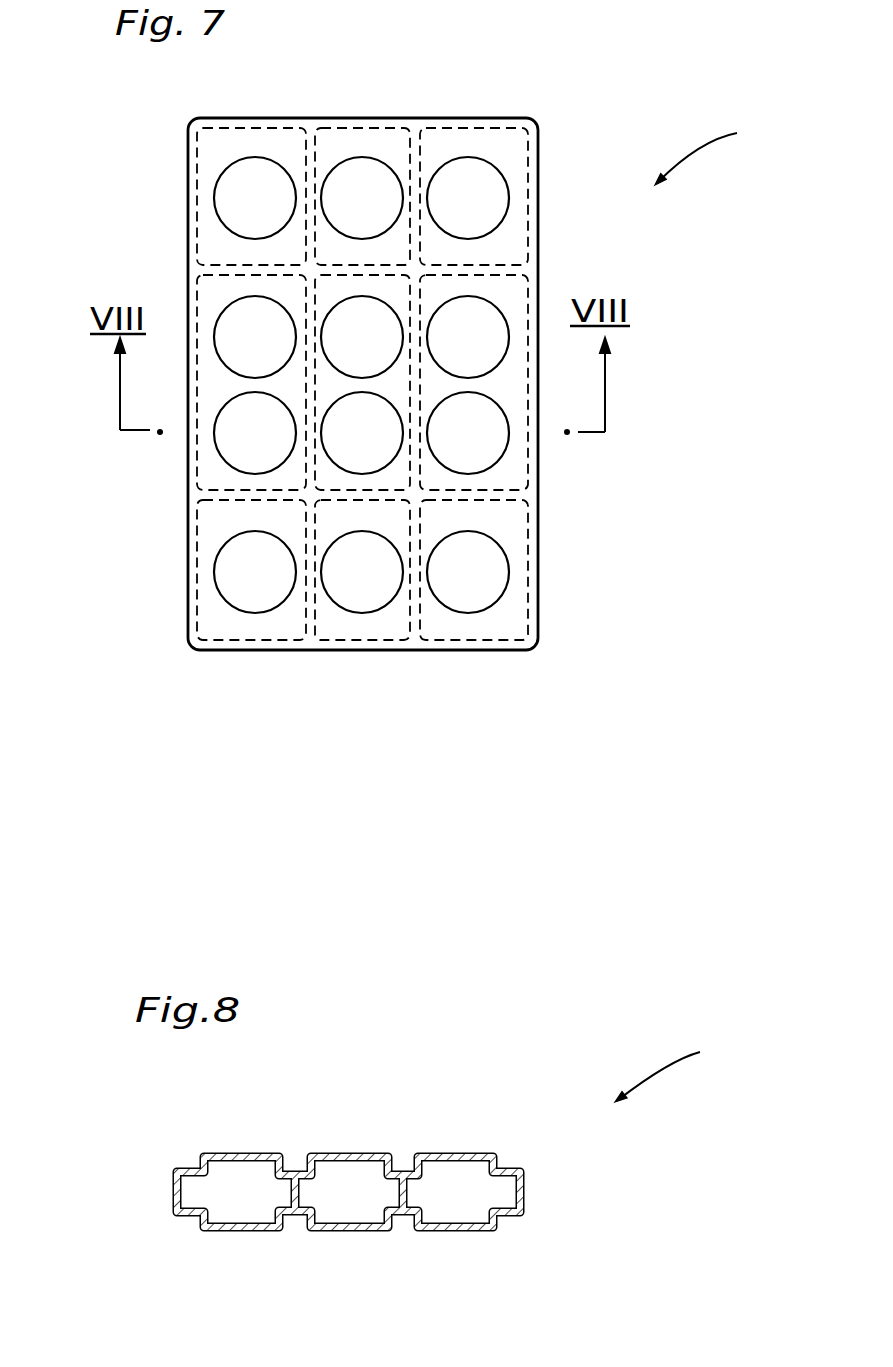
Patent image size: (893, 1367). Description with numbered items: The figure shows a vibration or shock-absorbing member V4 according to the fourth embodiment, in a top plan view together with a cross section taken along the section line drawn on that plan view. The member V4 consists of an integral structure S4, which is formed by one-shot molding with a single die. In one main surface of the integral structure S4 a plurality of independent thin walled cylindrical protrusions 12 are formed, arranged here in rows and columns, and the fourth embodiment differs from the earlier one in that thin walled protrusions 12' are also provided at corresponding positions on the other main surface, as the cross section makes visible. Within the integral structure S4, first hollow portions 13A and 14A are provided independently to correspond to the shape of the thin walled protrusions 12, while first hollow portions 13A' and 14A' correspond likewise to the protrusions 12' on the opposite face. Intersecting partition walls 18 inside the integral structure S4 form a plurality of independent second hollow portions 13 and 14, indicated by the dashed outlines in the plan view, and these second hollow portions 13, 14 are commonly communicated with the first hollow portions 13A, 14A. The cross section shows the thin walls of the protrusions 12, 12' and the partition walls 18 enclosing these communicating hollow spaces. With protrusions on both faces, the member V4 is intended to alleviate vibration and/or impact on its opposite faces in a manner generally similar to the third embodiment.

In FIG. 7, the thin walled cylindrical protrusion 12 is at (437, 416).
In FIG. 8, the thin walled cylindrical protrusion 12 is at (358, 1113).
In FIG. 8, the thin walled protrusion 12' is at (343, 1276).
In FIG. 7, the second hollow portion 13 is at (447, 138).
In FIG. 7, the first hollow portion 13A is at (543, 619).
In FIG. 7, the first hollow portion 13A' is at (495, 647).
In FIG. 7, the second hollow portion 14 is at (217, 403).
In FIG. 8, the second hollow portion 14 is at (196, 1190).
In FIG. 7, the first hollow portion 14A is at (128, 278).
In FIG. 8, the first hollow portion 14A is at (350, 1114).
In FIG. 7, the first hollow portion 14A' is at (178, 296).
In FIG. 8, the first hollow portion 14A' is at (397, 1258).
In FIG. 7, the partition wall 18 is at (228, 268).
In FIG. 8, the partition wall 18 is at (403, 1192).
In FIG. 7, the integral structure S4 is at (522, 118).
In FIG. 8, the integral structure S4 is at (495, 1150).
In FIG. 7, the vibration or shock-absorbing member V4 is at (734, 123).
In FIG. 8, the vibration or shock-absorbing member V4 is at (697, 1042).